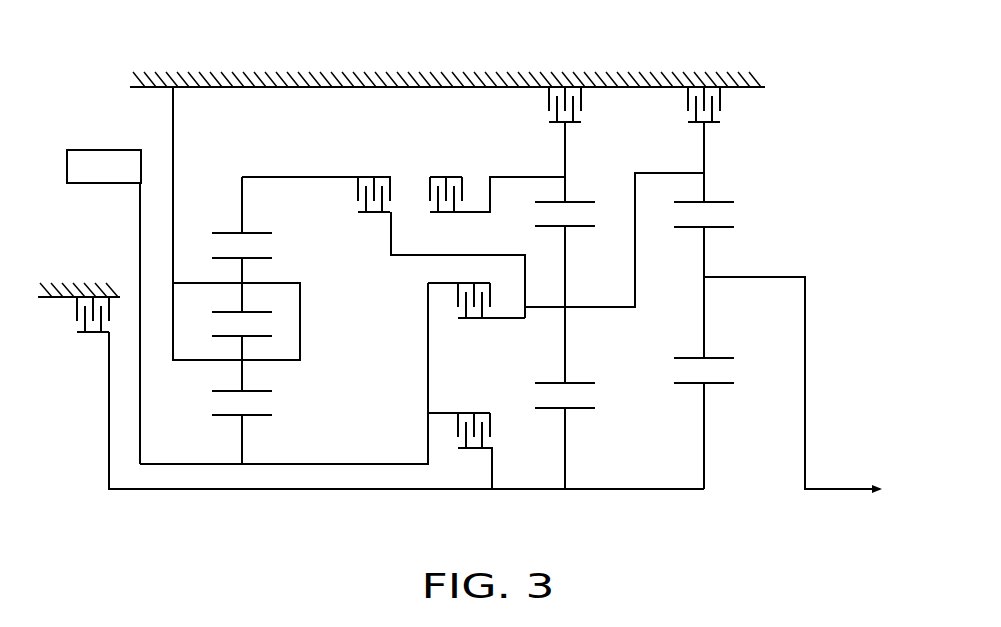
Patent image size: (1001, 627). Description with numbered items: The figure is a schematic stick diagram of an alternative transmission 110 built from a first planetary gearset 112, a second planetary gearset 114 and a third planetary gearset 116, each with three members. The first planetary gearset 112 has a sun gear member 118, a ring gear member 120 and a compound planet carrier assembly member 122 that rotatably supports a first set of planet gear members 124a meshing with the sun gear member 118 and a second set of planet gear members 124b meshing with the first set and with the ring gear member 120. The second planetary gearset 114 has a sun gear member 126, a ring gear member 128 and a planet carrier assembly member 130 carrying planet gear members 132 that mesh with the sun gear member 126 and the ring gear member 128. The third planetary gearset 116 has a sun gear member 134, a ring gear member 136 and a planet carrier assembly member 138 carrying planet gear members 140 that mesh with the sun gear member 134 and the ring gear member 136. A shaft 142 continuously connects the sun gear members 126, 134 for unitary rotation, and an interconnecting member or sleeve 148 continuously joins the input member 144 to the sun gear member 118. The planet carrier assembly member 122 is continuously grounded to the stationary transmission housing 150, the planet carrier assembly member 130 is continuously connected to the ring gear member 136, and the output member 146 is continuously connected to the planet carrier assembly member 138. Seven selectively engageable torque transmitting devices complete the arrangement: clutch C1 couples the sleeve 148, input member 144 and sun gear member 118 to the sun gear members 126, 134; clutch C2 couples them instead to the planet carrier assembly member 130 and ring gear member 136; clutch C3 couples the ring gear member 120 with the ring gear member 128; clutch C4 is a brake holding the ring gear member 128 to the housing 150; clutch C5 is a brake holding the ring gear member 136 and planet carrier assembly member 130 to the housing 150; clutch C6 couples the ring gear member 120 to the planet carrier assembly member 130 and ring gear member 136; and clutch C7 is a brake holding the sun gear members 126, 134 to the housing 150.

The transmission 110 is at (819, 156).
The first planetary gearset 112 is at (254, 275).
The second planetary gearset 114 is at (567, 305).
The third planetary gearset 116 is at (718, 305).
The sun gear member 118 is at (258, 412).
The ring gear member 120 is at (232, 236).
The planet carrier assembly member 122 is at (300, 318).
The first set of planet gear members 124a is at (212, 393).
The second set of planet gear members 124b is at (258, 258).
The sun gear member 126 is at (553, 405).
The ring gear member 128 is at (588, 195).
The planet carrier assembly member 130 is at (598, 310).
The planet gear members 132 is at (587, 228).
The sun gear member 134 is at (712, 387).
The ring gear member 136 is at (722, 195).
The planet carrier assembly member 138 is at (738, 280).
The planet gear members 140 is at (672, 230).
The shaft 142 is at (279, 491).
The input member 144 is at (140, 203).
The output member 146 is at (845, 489).
The interconnecting member 148 is at (345, 467).
The transmission housing 150 is at (168, 72).
The clutch C1 is at (505, 443).
The clutch C2 is at (447, 307).
The clutch C3 is at (420, 190).
The clutch (brake) C4 is at (603, 98).
The clutch (brake) C5 is at (742, 98).
The clutch C6 is at (352, 190).
The clutch (brake) C7 is at (60, 326).